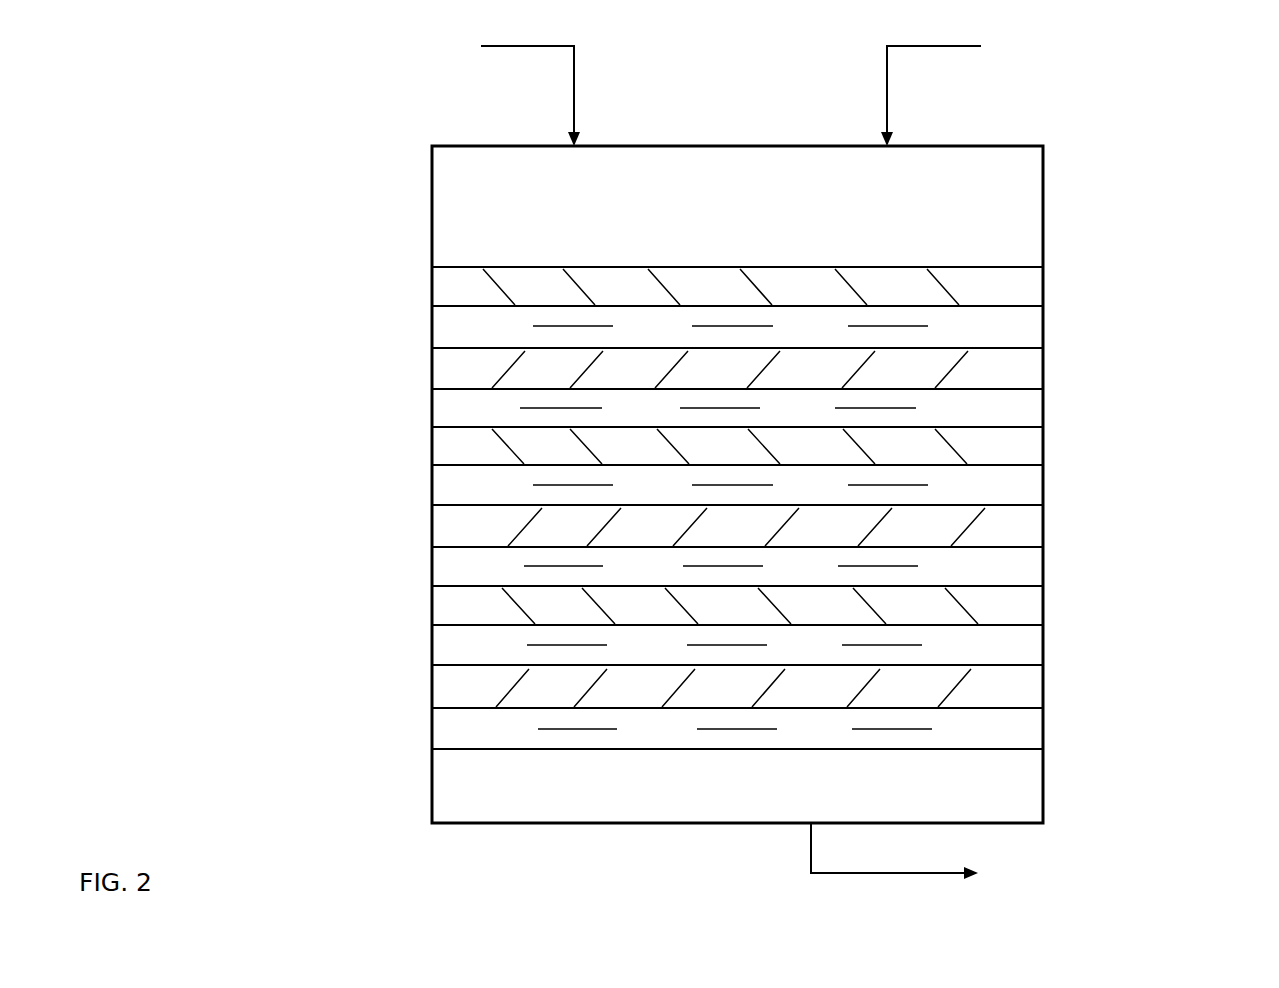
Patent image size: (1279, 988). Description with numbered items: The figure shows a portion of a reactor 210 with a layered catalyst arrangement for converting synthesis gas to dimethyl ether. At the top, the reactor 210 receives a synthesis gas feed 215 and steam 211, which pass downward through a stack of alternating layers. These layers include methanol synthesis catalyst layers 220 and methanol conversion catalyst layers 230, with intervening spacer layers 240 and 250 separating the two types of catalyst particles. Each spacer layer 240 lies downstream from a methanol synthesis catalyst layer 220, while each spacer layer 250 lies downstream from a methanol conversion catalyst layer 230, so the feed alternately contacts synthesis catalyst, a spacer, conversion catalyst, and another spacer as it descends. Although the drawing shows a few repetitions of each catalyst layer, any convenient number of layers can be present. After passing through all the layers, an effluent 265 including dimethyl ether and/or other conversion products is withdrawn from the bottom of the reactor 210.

The reactor 210 is at (267, 182).
The steam 211 is at (986, 58).
The synthesis gas feed 215 is at (458, 64).
The methanol synthesis catalyst layer 220 is at (1058, 283).
The methanol conversion catalyst layer 230 is at (1062, 365).
The spacer layer 240 is at (407, 320).
The spacer layer 250 is at (402, 398).
The effluent 265 is at (997, 871).